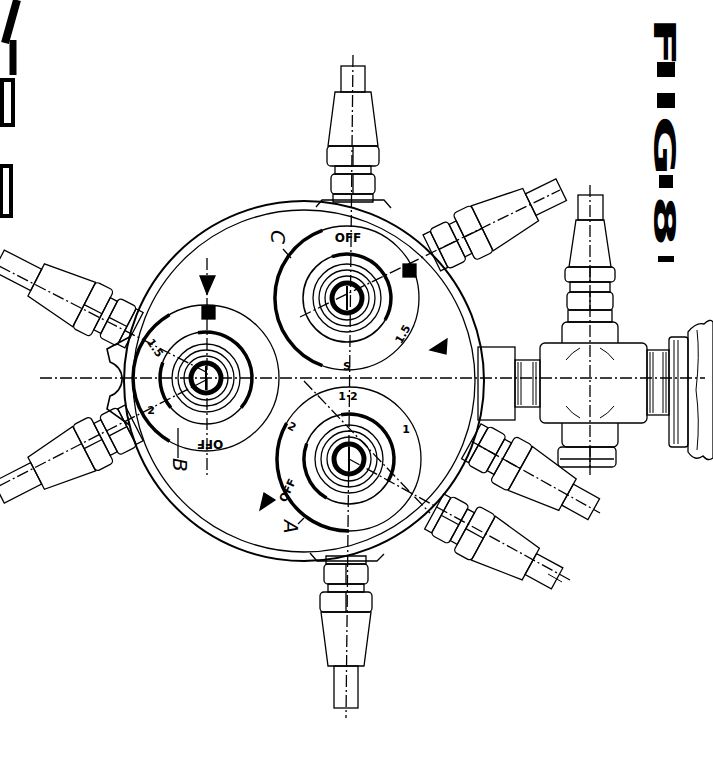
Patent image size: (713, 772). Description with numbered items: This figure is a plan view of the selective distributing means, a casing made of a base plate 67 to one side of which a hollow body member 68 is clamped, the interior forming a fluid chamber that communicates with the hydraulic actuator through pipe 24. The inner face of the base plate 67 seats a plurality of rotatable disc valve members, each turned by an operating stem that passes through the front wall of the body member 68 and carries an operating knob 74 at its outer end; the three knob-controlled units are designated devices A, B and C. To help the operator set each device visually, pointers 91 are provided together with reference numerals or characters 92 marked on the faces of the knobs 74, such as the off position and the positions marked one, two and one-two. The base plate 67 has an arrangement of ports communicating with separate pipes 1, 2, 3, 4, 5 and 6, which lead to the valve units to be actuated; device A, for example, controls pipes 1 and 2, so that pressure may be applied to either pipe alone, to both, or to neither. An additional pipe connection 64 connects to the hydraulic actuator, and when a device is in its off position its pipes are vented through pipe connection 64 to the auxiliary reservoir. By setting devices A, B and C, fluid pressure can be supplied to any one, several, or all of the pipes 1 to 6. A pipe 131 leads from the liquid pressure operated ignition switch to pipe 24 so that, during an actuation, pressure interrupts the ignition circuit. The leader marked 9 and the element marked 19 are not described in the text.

The pipe 1 is at (531, 575).
The pipe 2 is at (339, 690).
The pipe 3 is at (21, 486).
The pipe 4 is at (18, 276).
The pipe 5 is at (343, 80).
The pipe 6 is at (541, 181).
The hose connection 9 is at (533, 572).
The handle 19 is at (698, 447).
The pipe 24 is at (531, 358).
The pipe connection 64 is at (572, 506).
The base plate 67 is at (239, 222).
The hollow body member 68 is at (262, 203).
The operating knob 74 is at (237, 336).
The pointer 91 is at (210, 277).
The reference numerals or characters 92 is at (203, 311).
The pipe 131 is at (601, 200).